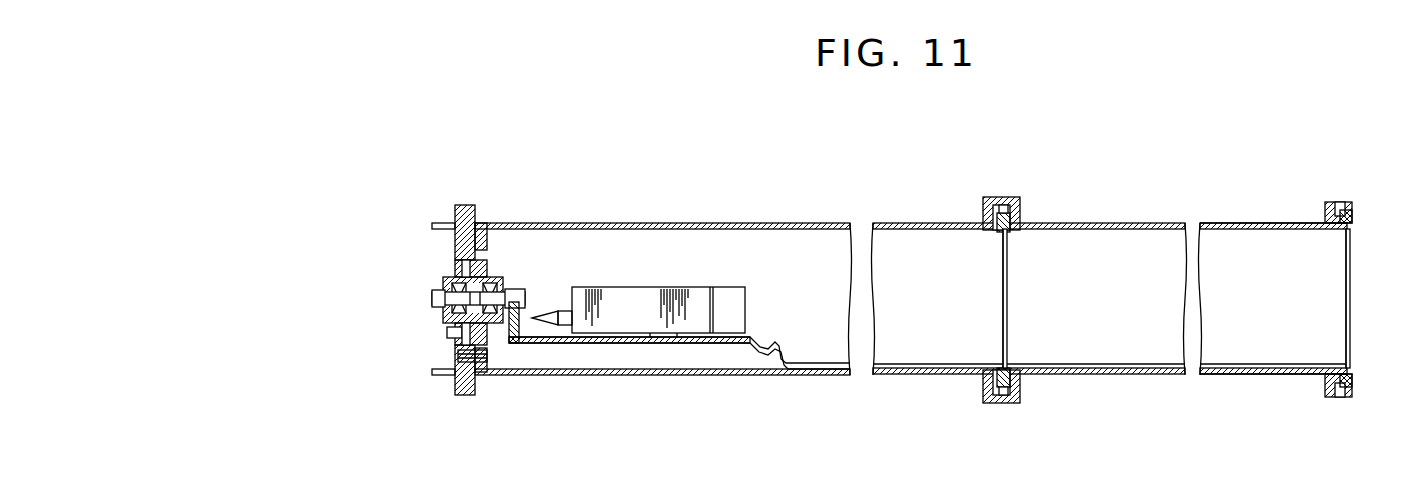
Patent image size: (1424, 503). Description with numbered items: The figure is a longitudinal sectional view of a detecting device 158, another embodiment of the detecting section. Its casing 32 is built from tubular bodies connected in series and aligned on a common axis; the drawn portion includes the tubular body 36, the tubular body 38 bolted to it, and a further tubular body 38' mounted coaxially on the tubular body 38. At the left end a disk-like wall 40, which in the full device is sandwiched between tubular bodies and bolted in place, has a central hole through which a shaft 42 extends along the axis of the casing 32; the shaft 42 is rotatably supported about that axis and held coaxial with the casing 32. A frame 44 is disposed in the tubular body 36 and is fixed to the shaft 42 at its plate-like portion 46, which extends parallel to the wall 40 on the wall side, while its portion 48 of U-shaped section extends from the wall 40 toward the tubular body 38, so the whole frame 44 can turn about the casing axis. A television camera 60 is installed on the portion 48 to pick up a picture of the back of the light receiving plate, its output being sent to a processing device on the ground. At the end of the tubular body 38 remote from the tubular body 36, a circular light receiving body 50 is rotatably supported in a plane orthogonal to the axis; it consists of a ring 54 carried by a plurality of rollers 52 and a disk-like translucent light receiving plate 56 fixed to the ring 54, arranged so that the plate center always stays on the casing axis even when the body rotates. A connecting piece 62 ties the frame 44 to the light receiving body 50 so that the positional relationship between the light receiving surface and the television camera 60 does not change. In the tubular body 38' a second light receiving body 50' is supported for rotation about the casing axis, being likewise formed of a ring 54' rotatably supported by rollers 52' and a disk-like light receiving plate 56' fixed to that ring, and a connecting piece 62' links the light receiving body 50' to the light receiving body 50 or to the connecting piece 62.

The casing 32 is at (685, 376).
The tubular body 36 is at (738, 377).
The tubular body 38 is at (1029, 320).
The tubular body 38' is at (1211, 324).
The disk-like wall 40 is at (470, 218).
The shaft 42 is at (503, 290).
The frame 44 is at (590, 339).
The plate-like portion 46 is at (517, 338).
The U-shaped section portion 48 is at (628, 344).
The light receiving body 50 is at (1035, 298).
The light receiving body 50' is at (1376, 298).
The rollers 52 is at (1022, 284).
The rollers 52' is at (1343, 278).
The ring 54 is at (1042, 290).
The ring 54' is at (1371, 298).
The light receiving plate 56 is at (1033, 298).
The light receiving plate 56' is at (1376, 298).
The television camera 60 is at (645, 292).
The connecting piece 62 is at (938, 342).
The connecting piece 62' is at (1176, 395).
The detecting device 158 is at (1150, 213).